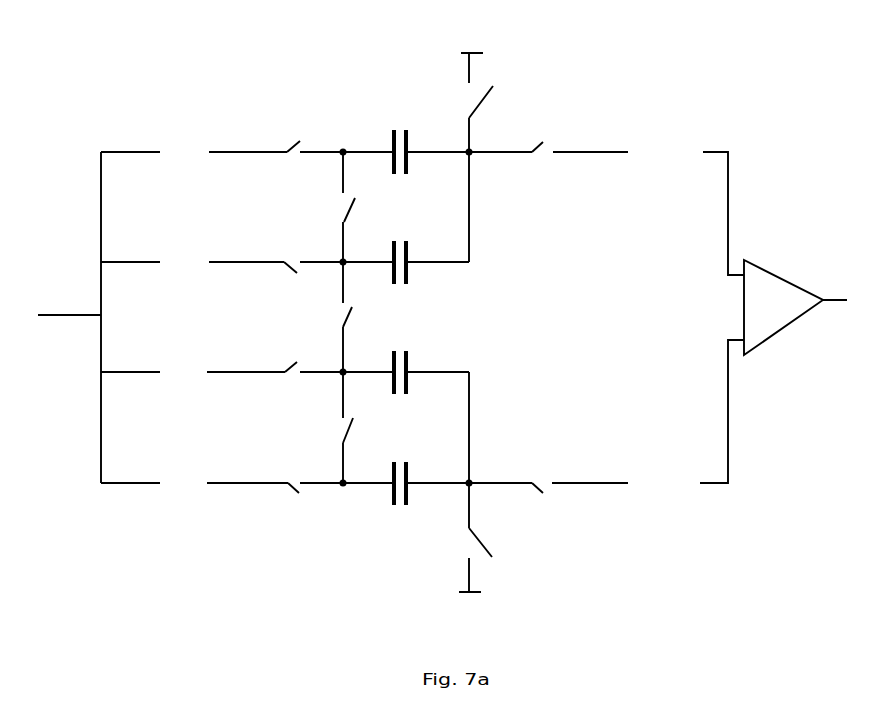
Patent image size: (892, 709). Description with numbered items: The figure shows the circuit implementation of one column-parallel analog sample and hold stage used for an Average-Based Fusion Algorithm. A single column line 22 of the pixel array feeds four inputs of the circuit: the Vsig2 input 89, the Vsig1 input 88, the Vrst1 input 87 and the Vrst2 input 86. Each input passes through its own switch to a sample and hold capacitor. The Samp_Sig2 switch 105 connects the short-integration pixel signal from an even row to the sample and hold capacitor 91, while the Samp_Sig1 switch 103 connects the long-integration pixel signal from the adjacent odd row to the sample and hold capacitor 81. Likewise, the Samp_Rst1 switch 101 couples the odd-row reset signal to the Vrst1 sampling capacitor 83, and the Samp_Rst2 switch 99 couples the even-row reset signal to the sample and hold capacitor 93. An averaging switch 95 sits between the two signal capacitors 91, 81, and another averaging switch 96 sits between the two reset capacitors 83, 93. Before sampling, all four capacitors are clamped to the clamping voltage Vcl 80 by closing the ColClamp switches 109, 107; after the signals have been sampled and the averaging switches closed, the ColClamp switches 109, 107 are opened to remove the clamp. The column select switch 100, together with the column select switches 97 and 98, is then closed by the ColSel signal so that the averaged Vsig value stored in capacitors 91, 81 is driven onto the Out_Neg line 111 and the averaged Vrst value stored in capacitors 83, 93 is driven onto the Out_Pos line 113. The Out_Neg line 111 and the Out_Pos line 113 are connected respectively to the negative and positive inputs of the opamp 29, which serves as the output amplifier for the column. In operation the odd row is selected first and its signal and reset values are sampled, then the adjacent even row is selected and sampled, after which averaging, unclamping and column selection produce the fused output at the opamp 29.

The column line 22 is at (63, 315).
The Vsig2 input 89 is at (160, 148).
The Vsig1 input 88 is at (172, 257).
The Vrst1 input 87 is at (180, 370).
The Vrst2 signal input 86 is at (180, 478).
The Samp_Sig2 switch 105 is at (243, 120).
The Samp_Sig1 switch 103 is at (285, 260).
The Samp_Rst1 switch 101 is at (242, 347).
The Samp_Rst2 switch 99 is at (283, 516).
The averaging switch 95 is at (273, 207).
The averaging switch 96 is at (255, 427).
The column select switch 100 is at (284, 316).
The sample and hold capacitor 91 is at (393, 128).
The sample and hold capacitor 81 is at (407, 283).
The Vrst1 sampling capacitor 83 is at (407, 353).
The sample and hold capacitor 93 is at (405, 465).
The ColClamp switch 109 is at (401, 88).
The ColClamp switch 107 is at (377, 543).
The clamping voltage Vcl 80 is at (486, 40).
The column select switch 97 is at (578, 118).
The column select switch 98 is at (547, 522).
The Out_Neg line 111 is at (688, 167).
The Out_Pos line 113 is at (688, 497).
The opamp 29 is at (762, 268).